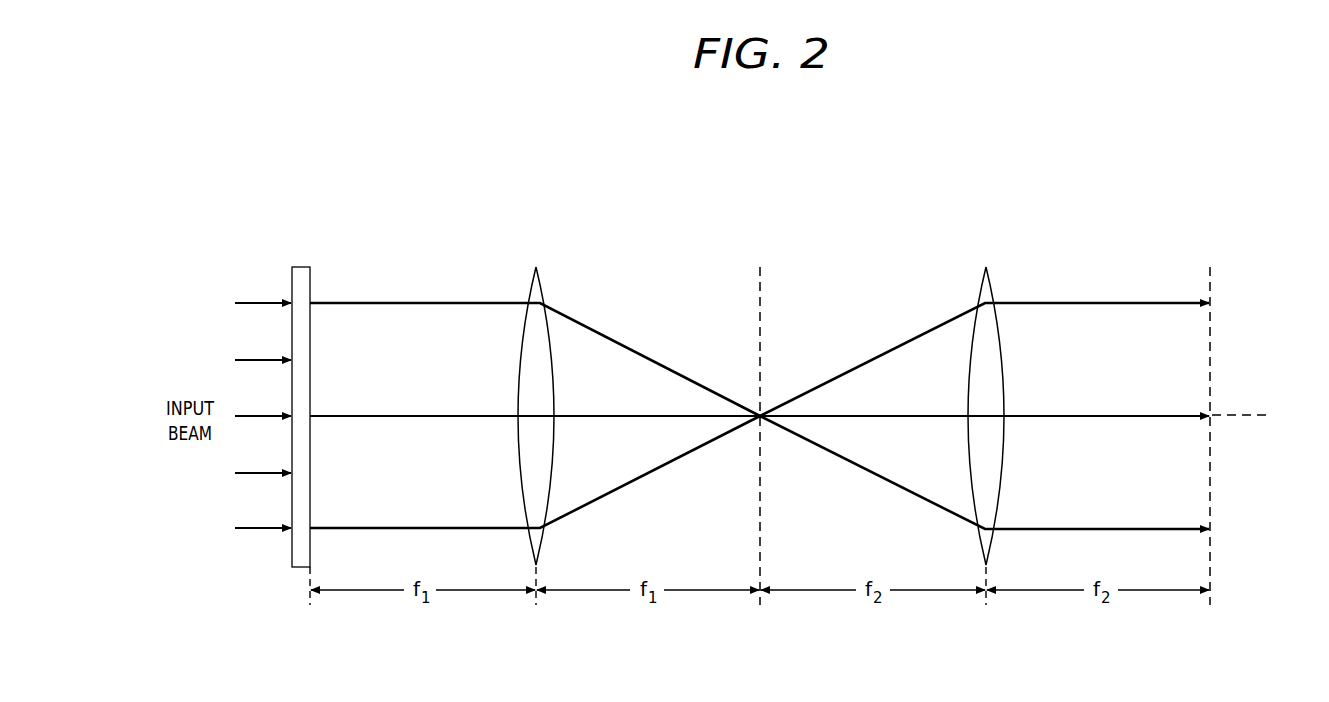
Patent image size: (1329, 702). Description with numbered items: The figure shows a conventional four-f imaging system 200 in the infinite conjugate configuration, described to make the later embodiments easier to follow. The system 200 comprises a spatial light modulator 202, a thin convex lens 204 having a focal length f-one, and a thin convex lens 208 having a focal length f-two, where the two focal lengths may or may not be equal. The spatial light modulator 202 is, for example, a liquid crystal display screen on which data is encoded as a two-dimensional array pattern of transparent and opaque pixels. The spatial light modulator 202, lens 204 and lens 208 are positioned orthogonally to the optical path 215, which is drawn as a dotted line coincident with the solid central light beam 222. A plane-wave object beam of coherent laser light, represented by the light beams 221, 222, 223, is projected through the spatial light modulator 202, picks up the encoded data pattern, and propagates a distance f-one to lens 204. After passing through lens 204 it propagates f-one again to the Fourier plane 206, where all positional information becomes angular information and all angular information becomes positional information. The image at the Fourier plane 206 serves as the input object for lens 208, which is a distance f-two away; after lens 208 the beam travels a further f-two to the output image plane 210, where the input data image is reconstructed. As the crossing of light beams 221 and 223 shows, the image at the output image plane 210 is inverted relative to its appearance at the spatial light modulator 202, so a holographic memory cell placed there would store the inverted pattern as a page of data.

The 4-f imaging system 200 is at (376, 143).
The spatial light modulator 202 is at (302, 266).
The thin convex lens 204 is at (537, 267).
The Fourier plane 206 is at (760, 267).
The thin convex lens 208 is at (987, 267).
The output image plane 210 is at (1211, 267).
The optical path 215 is at (1266, 415).
The light beam 221 is at (423, 302).
The light beam 222 is at (423, 415).
The light beam 223 is at (423, 527).